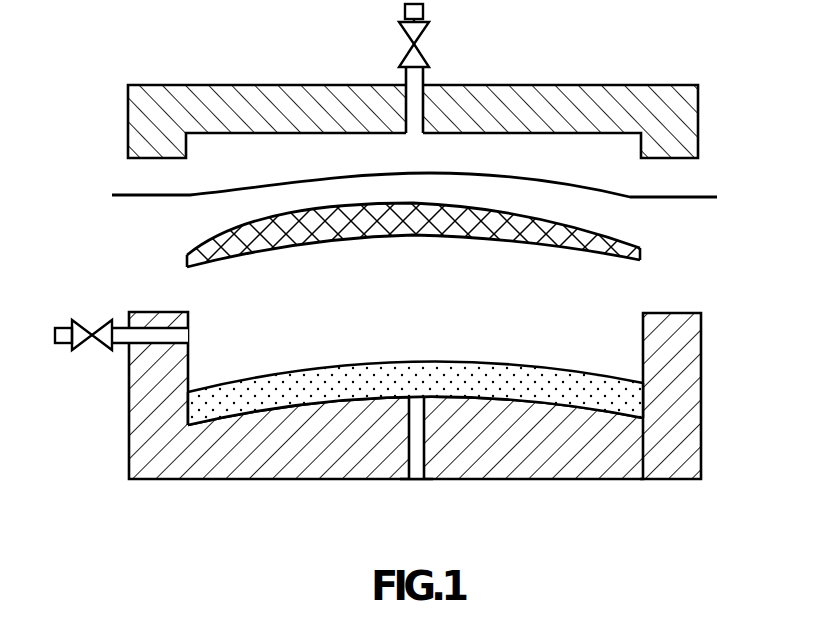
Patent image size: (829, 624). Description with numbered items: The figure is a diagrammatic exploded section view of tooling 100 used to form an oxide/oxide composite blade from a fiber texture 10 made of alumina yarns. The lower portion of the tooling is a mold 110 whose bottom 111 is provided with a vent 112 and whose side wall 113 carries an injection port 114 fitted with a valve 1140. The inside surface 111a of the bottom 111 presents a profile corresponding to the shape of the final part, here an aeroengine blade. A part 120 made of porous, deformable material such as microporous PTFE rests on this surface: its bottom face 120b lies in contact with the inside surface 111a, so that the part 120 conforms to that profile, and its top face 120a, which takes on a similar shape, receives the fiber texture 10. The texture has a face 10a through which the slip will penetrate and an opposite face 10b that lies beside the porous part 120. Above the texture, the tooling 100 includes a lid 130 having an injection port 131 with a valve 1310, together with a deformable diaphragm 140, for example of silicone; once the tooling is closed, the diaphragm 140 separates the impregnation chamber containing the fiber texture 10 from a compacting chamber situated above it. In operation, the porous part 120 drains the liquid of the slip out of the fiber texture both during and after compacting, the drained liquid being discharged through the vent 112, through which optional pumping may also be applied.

The tooling 100 is at (125, 59).
The lid 130 is at (663, 108).
The injection port 131 is at (418, 75).
The valve 1310 is at (406, 43).
The deformable diaphragm 140 is at (297, 176).
The fiber texture 10 is at (420, 228).
The face of the fiber texture 10a is at (512, 216).
The face of the fiber texture 10b is at (528, 242).
The mold 110 is at (701, 400).
The bottom 111 is at (548, 462).
The inside surface 111a is at (347, 377).
The vent 112 is at (418, 462).
The side wall 113 is at (666, 340).
The injection port 114 is at (146, 337).
The valve 1140 is at (103, 327).
The part made of porous material 120 is at (322, 387).
The top face 120a is at (447, 360).
The bottom face 120b is at (259, 412).